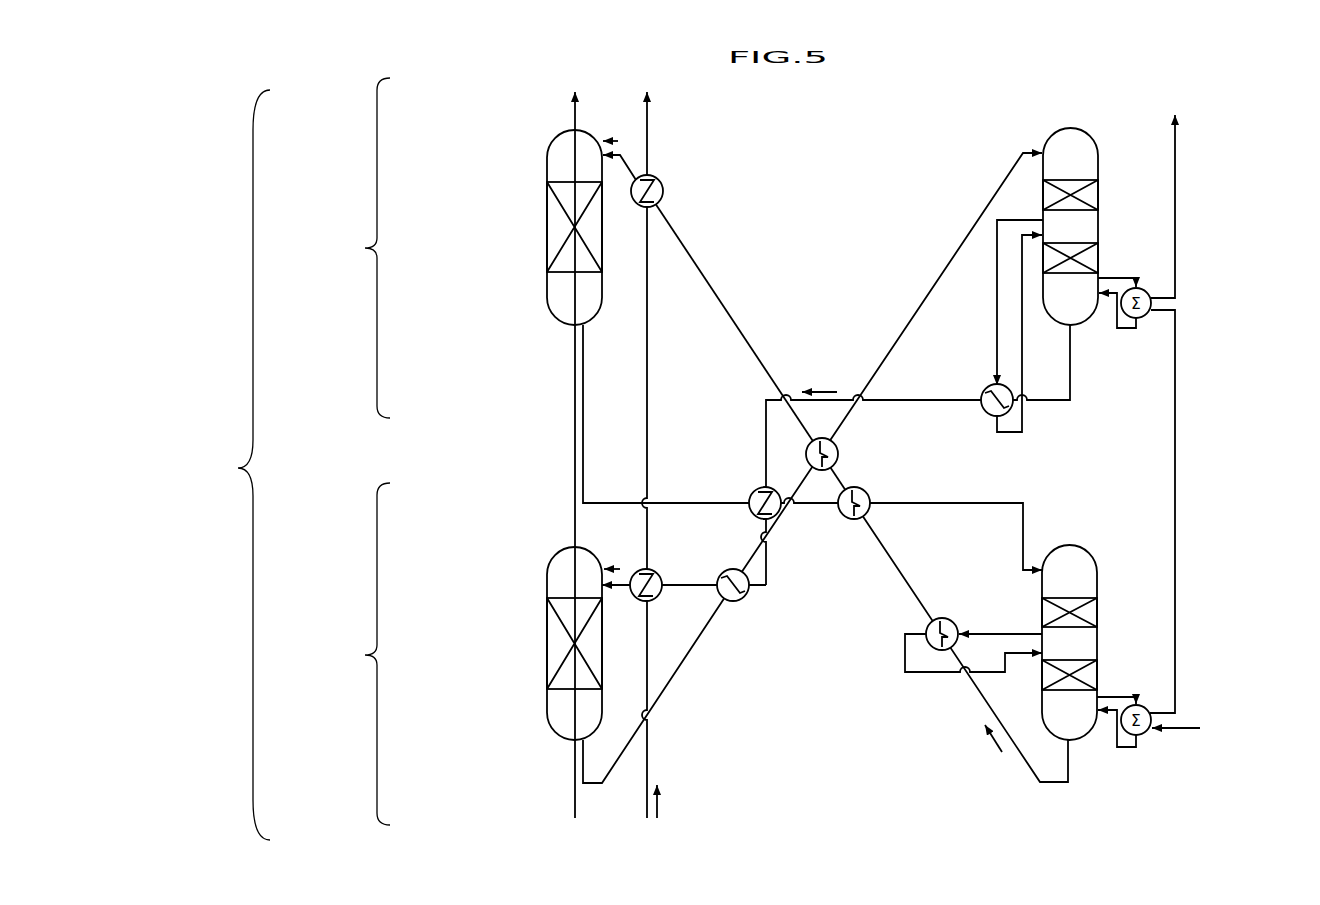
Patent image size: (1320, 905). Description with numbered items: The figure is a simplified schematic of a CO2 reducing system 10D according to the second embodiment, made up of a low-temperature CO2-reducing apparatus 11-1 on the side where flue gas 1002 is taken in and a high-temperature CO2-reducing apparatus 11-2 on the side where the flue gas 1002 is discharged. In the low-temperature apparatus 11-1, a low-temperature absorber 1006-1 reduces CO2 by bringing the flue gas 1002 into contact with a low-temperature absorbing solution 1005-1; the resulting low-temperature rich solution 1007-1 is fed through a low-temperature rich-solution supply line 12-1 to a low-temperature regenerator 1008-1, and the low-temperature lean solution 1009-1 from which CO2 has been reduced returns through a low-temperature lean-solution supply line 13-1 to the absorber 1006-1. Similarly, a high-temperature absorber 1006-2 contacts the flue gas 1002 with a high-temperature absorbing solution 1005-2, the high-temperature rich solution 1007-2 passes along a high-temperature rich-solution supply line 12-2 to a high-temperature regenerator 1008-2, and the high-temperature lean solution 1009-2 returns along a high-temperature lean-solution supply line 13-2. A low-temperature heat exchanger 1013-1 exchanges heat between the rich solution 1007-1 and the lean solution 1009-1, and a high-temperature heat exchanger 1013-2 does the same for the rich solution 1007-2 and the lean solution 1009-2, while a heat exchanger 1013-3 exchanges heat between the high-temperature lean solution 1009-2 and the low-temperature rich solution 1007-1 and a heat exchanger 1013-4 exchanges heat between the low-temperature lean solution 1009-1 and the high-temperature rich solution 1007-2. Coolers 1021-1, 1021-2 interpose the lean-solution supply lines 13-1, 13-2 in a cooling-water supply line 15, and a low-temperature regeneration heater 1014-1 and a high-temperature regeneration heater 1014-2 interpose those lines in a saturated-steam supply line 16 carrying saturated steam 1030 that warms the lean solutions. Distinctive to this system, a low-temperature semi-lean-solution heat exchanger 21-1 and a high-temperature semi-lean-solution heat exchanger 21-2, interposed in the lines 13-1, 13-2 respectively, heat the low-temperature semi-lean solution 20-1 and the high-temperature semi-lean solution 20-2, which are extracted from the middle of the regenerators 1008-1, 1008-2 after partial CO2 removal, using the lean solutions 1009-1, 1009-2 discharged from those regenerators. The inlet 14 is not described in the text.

The CO2 reducing system 10D is at (235, 465).
The low-temperature CO2-reducing apparatus 11-1 is at (357, 654).
The high-temperature CO2-reducing apparatus 11-2 is at (357, 248).
The flue gas 1002 is at (562, 470).
The regeneration gas inlet 14 is at (660, 815).
The cooling-water supply line 15 is at (650, 772).
The saturated-steam supply line 16 is at (1175, 265).
The saturated steam 1030 is at (1197, 729).
The low-temperature absorbing solution 1005-1 is at (620, 569).
The high-temperature absorbing solution 1005-2 is at (618, 141).
The low-temperature absorber 1006-1 is at (547, 580).
The high-temperature absorber 1006-2 is at (547, 167).
The cooler 1021-1 is at (658, 573).
The cooler 1021-2 is at (660, 179).
The low-temperature rich-solution supply line 12-1 is at (1012, 168).
The high-temperature rich-solution supply line 12-2 is at (583, 392).
The low-temperature lean-solution supply line 13-1 is at (890, 398).
The high-temperature lean-solution supply line 13-2 is at (987, 712).
The low-temperature rich solution 1007-1 is at (693, 662).
The high-temperature rich solution 1007-2 is at (990, 494).
The low-temperature lean solution 1009-1 is at (822, 392).
The high-temperature lean solution 1009-2 is at (1002, 752).
The low-temperature heat exchanger 1013-1 is at (737, 602).
The high-temperature heat exchanger 1013-2 is at (852, 519).
The heat exchanger 1013-3 is at (806, 455).
The heat exchanger 1013-4 is at (753, 492).
The low-temperature regenerator 1008-1 is at (1090, 132).
The high-temperature regenerator 1008-2 is at (1098, 580).
The low-temperature semi-lean solution 20-1 is at (986, 280).
The high-temperature semi-lean solution 20-2 is at (892, 634).
The low-temperature semi-lean-solution heat exchanger 21-1 is at (990, 385).
The high-temperature semi-lean-solution heat exchanger 21-2 is at (954, 621).
The low-temperature regeneration heater 1014-1 is at (1146, 316).
The high-temperature regeneration heater 1014-2 is at (1146, 735).